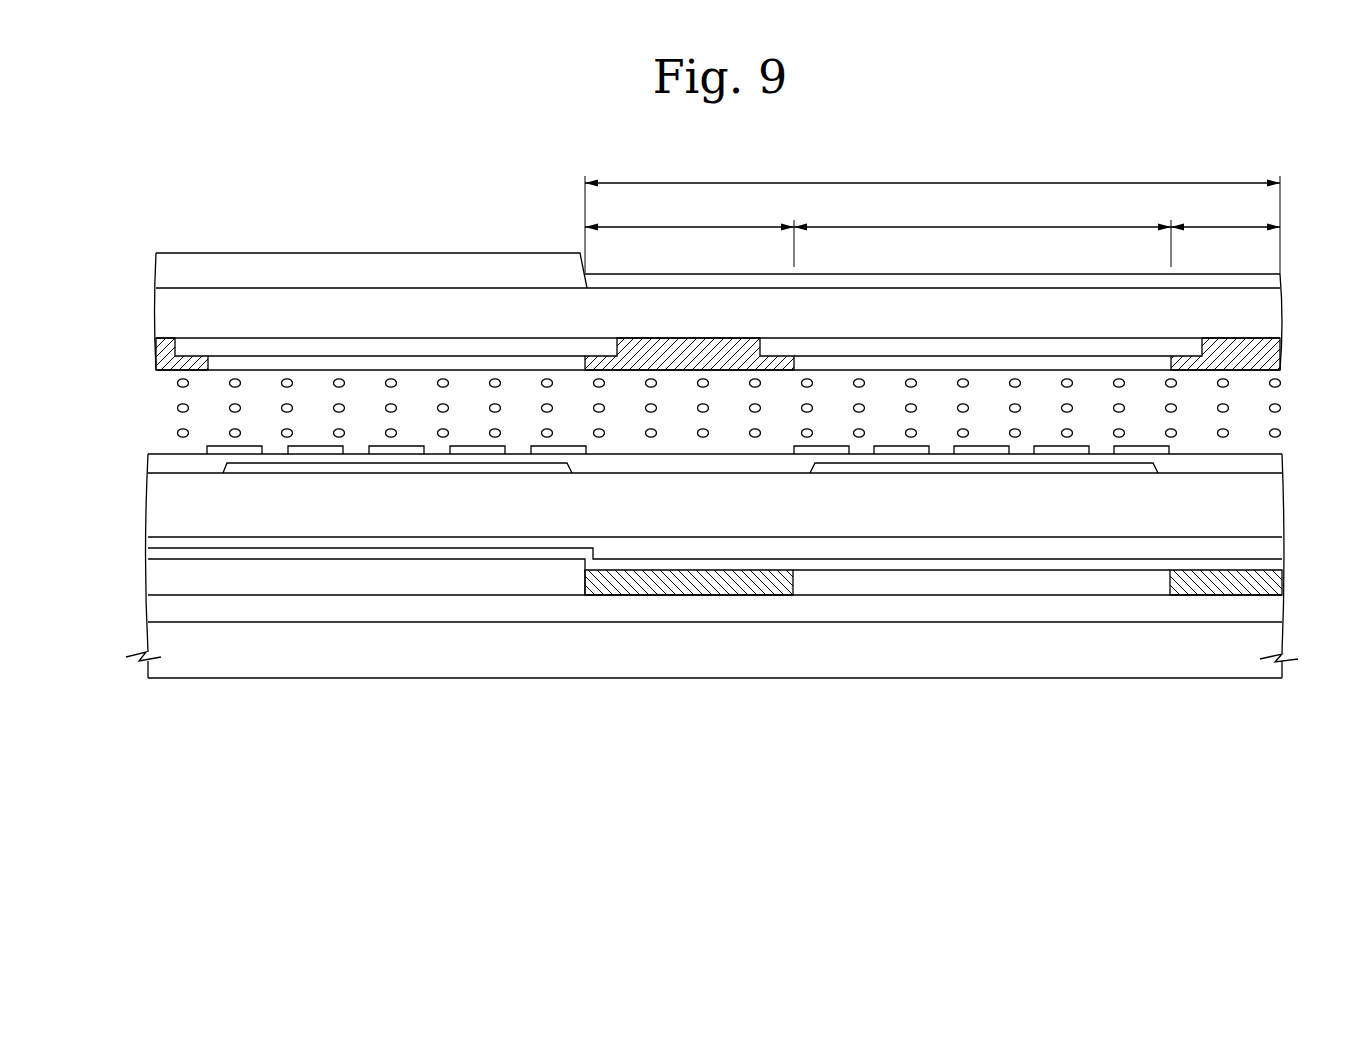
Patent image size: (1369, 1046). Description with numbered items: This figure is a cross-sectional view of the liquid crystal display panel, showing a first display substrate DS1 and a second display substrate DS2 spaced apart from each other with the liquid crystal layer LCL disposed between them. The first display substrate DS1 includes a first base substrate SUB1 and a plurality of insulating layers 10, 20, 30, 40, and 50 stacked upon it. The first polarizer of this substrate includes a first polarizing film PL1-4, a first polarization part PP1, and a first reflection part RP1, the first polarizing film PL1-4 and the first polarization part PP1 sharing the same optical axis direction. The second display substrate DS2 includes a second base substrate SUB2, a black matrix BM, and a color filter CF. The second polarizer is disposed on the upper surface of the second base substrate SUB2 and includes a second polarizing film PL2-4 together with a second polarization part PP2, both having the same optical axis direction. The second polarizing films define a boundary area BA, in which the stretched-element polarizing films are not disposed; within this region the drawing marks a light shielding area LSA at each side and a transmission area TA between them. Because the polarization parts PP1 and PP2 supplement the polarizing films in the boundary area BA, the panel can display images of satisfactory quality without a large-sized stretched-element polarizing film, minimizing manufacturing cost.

The second polarizing film PL2-4 is at (160, 270).
The second polarization part PP2 is at (1268, 281).
The second base substrate SUB2 is at (160, 316).
The color filter CF is at (1005, 340).
The black matrix BM is at (158, 352).
The second display substrate DS2 is at (708, 311).
The liquid crystal layer LCL is at (1295, 372).
The insulating layer 50 is at (160, 463).
The insulating layer 40 is at (157, 507).
The insulating layer 30 is at (150, 541).
The insulating layer 20 is at (152, 552).
The first polarizing film PL1-4 is at (673, 648).
The first reflection part RP1 is at (701, 590).
The first polarization part PP1 is at (908, 588).
The insulating layer 10 is at (157, 607).
The first base substrate SUB1 is at (157, 636).
The first display substrate DS1 is at (708, 591).
The boundary area BA is at (932, 216).
The light shielding area LSA is at (932, 216).
The transmission area TA is at (982, 234).